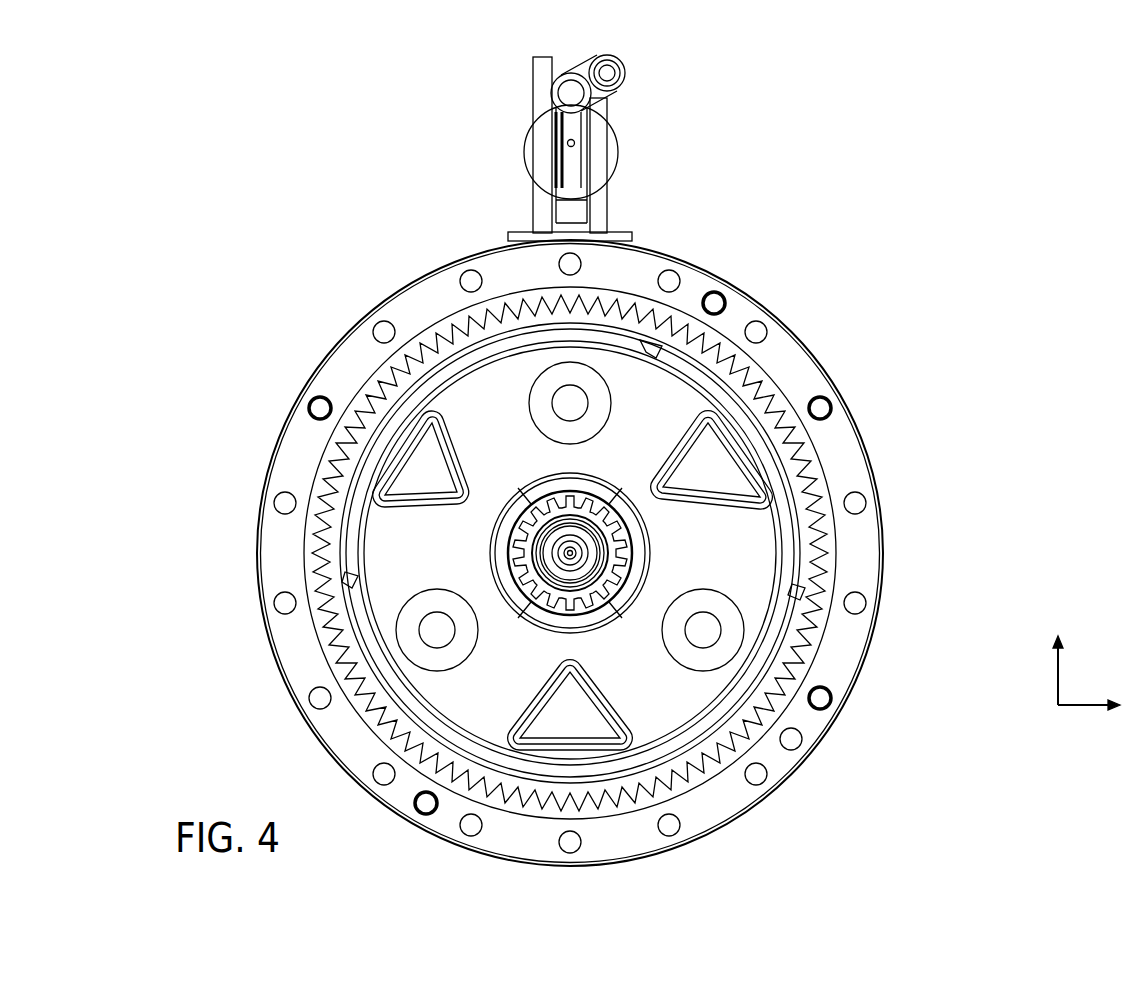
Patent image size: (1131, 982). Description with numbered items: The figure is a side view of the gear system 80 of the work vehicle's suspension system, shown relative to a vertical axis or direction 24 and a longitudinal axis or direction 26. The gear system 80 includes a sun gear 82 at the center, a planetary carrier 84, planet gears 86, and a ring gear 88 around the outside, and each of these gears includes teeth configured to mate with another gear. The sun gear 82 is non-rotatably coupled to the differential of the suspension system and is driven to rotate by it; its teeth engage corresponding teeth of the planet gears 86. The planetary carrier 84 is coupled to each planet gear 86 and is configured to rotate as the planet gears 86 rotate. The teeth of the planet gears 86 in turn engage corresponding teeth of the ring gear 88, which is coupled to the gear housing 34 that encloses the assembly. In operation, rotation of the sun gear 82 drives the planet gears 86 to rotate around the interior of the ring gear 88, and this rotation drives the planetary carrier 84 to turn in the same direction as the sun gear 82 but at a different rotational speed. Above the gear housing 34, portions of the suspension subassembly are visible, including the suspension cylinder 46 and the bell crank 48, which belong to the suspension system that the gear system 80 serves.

The vertical axis or direction 24 is at (1058, 678).
The longitudinal axis or direction 26 is at (1088, 703).
The gear housing 34 is at (877, 485).
The suspension cylinder 46 is at (618, 146).
The bell crank 48 is at (533, 77).
The gear system 80 is at (959, 232).
The sun gear 82 is at (543, 597).
The planetary carrier 84 is at (677, 743).
The planet gears 86 is at (800, 595).
The ring gear 88 is at (823, 558).